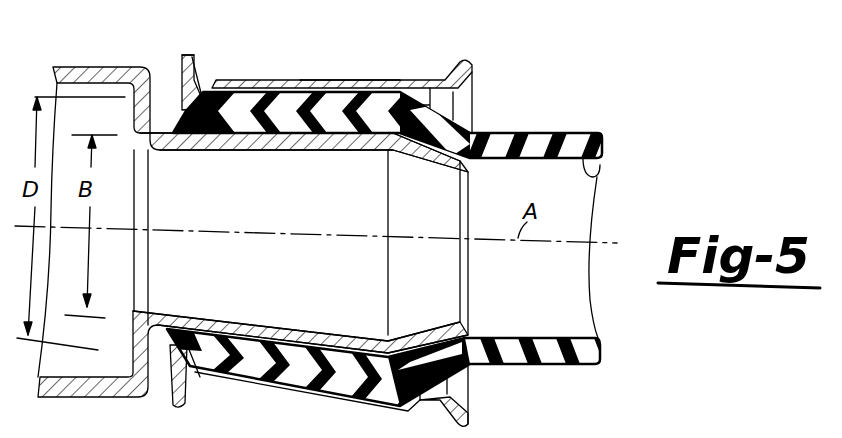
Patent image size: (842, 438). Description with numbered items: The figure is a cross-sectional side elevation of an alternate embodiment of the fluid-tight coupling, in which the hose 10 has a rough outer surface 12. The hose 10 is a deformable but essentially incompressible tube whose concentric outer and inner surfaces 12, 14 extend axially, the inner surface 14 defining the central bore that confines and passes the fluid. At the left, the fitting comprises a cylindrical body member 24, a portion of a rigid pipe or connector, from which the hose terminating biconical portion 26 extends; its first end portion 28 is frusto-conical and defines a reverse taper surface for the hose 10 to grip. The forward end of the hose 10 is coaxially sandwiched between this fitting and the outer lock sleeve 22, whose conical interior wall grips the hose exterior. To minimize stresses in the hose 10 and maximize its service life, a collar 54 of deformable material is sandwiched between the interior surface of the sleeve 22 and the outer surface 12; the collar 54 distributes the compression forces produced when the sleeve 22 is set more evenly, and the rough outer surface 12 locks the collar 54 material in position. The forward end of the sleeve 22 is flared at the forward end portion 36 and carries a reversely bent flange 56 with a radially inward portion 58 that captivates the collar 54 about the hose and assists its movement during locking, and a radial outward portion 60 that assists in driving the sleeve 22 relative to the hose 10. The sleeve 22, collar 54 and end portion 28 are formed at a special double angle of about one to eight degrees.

The hose 10 is at (605, 152).
The outer surface 12 is at (578, 133).
The inner surface 14 is at (598, 180).
The outer lock sleeve 22 is at (388, 79).
The cylindrical body member 24 is at (105, 73).
The hose terminating biconical portion 26 is at (335, 150).
The first end portion 28 is at (360, 142).
The forward end portion 36 is at (473, 85).
The collar 54 is at (348, 81).
The reversely bent flange 56 is at (202, 49).
The radially inward portion 58 is at (233, 136).
The radial outward portion 60 is at (181, 80).